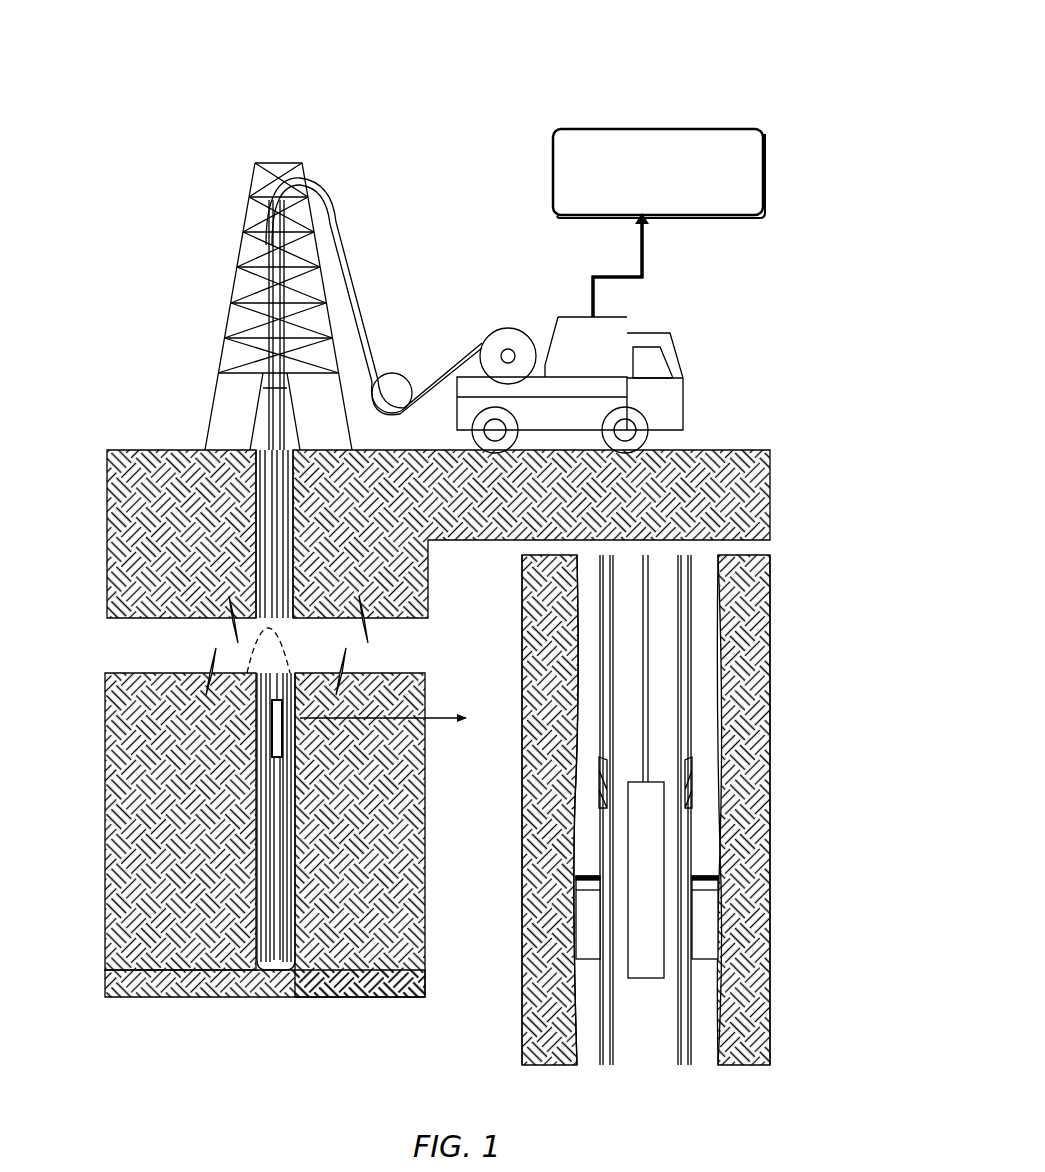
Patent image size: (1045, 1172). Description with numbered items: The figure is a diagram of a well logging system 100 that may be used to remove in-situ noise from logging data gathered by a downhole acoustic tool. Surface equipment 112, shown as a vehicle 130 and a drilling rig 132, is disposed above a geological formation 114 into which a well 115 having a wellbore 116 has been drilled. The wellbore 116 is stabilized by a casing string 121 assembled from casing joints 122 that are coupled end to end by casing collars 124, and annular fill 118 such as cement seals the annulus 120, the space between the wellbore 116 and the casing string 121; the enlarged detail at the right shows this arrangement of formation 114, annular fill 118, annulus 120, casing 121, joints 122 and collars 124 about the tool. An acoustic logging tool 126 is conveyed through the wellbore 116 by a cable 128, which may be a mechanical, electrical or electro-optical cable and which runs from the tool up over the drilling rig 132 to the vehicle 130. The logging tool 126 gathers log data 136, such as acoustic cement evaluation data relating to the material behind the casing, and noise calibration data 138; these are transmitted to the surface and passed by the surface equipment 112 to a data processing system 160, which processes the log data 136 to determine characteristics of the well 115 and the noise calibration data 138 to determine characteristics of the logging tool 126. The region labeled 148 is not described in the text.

The well logging system 100 is at (590, 55).
The surface equipment 112 is at (472, 204).
The geological formation 114 is at (128, 775).
The well 115 is at (300, 905).
The wellbore 116 is at (168, 452).
The annular fill 118 is at (250, 520).
The annulus 120 is at (250, 560).
The casing string 121 is at (255, 893).
The casing joints 122 is at (600, 657).
The casing collars 124 is at (597, 762).
The acoustic logging tool 126 is at (255, 722).
The cable 128 is at (357, 298).
The vehicle 130 is at (572, 316).
The drilling rig 132 is at (241, 232).
The log data 136 is at (650, 254).
The noise calibration data 138 is at (617, 269).
The annulus 148 is at (716, 675).
The data processing system 160 is at (659, 173).